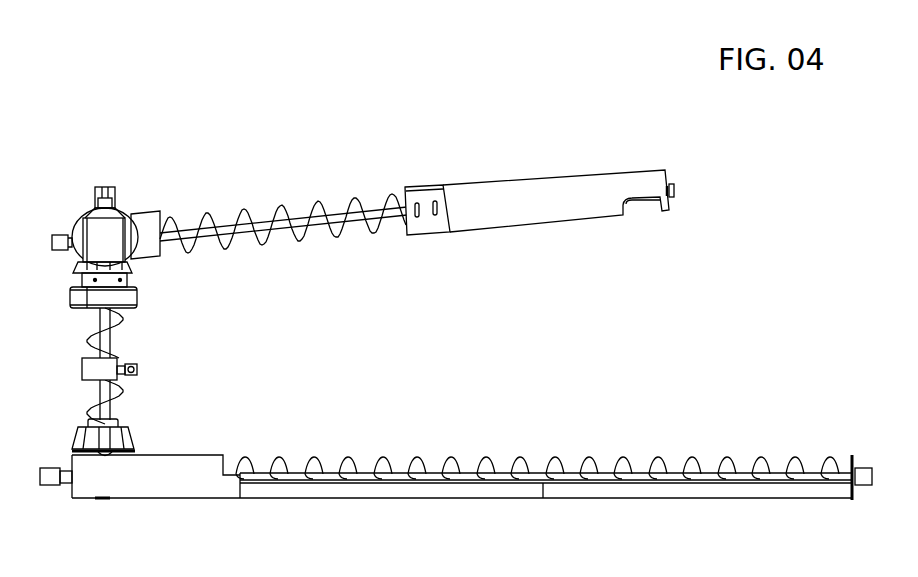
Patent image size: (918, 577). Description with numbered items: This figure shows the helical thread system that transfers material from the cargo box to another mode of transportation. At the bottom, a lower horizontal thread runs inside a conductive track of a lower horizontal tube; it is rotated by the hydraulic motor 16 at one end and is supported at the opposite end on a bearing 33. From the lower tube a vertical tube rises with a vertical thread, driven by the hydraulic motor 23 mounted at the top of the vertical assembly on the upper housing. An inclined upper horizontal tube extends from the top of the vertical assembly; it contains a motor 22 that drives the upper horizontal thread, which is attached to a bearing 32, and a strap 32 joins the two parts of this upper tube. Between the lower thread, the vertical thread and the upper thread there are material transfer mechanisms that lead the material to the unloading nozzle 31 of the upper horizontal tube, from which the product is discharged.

The hydraulic motor 16 is at (48, 485).
The motor 22 is at (58, 235).
The hydraulic motor 23 is at (104, 187).
The unloading nozzle 31 is at (646, 201).
The strap 32 is at (423, 192).
The bearing 33 is at (865, 485).